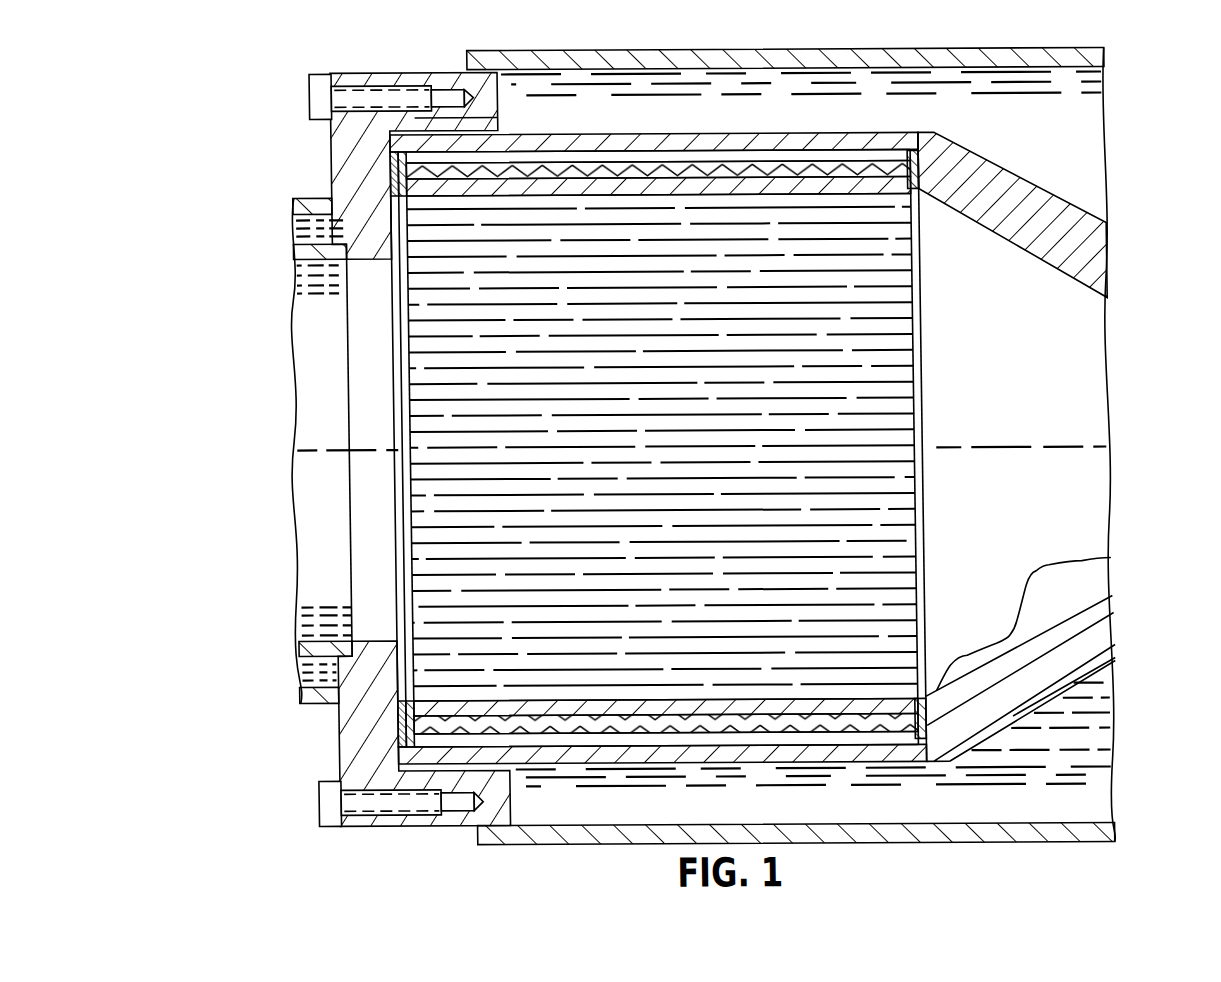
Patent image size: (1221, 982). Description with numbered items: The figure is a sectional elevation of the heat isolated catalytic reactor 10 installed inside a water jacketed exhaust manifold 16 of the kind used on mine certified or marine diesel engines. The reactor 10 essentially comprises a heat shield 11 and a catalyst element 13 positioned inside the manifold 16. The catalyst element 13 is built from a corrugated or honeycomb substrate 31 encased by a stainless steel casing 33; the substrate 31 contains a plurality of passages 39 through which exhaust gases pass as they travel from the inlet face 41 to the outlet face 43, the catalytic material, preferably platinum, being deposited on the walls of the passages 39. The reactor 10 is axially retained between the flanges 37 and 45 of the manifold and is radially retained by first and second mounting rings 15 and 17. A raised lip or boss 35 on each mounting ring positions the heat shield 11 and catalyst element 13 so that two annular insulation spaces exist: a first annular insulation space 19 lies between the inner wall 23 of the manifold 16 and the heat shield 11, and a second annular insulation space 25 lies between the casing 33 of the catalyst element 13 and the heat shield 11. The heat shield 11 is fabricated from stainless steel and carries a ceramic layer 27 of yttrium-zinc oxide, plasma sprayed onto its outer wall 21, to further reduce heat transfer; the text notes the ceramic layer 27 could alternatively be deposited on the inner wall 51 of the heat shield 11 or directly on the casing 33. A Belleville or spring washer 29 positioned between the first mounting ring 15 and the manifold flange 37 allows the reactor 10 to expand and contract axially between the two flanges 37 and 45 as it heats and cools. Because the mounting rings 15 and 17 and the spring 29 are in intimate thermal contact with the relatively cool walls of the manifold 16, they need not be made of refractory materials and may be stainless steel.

The heat isolated catalytic reactor 10 is at (278, 175).
The heat shield 11 is at (873, 156).
The catalyst element 13 is at (918, 341).
The first mounting ring 15 is at (397, 705).
The water jacketed exhaust manifold 16 is at (870, 46).
The second mounting ring 17 is at (920, 163).
The first annular insulation space 19 is at (685, 740).
The outer wall 21 is at (560, 172).
The inner wall 23 is at (681, 155).
The second annular insulation space 25 is at (523, 710).
The ceramic layer 27 is at (596, 162).
The Belleville spring washer 29 is at (385, 200).
The corrugated substrate 31 is at (880, 545).
The casing 33 is at (861, 697).
The raised lip or boss 35 is at (882, 185).
The flange 37 is at (356, 72).
The passages 39 is at (887, 392).
The inlet face 41 is at (401, 397).
The outlet face 43 is at (909, 422).
The flange 45 is at (1092, 565).
The inner wall 51 is at (715, 183).